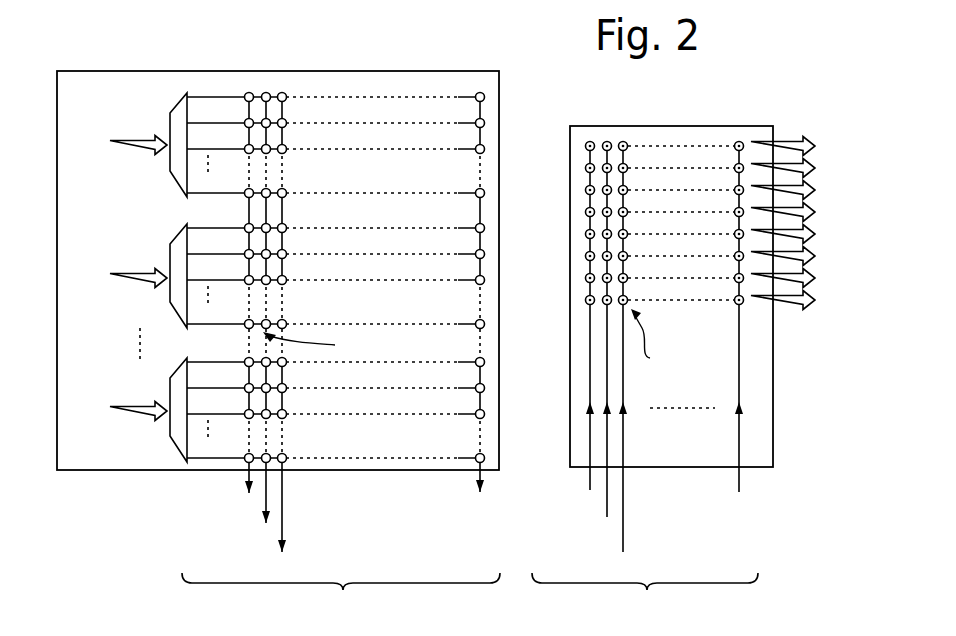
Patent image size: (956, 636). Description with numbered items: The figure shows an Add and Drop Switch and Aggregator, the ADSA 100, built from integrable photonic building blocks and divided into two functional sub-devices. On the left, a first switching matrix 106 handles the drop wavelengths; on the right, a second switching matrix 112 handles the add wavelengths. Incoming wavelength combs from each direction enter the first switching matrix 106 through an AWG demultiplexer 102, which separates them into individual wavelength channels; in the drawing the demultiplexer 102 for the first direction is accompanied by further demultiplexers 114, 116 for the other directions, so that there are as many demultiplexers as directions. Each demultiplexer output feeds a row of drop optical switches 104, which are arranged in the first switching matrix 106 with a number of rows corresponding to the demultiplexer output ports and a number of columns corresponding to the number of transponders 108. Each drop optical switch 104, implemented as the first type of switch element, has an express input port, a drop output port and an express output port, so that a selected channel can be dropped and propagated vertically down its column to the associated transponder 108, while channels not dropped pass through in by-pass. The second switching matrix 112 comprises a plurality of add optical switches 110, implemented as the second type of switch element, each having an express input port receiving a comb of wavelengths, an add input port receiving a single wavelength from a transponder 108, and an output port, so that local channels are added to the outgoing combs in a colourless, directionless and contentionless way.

The Add and Drop Switch and Aggregator 100 is at (872, 557).
The demultiplexer 102 is at (178, 172).
The drop optical switch 104 is at (248, 92).
The first switching matrix 106 is at (490, 82).
The transponders 108 is at (470, 550).
The add optical switch 110 is at (586, 146).
The second switching matrix 112 is at (762, 376).
The wavelength demultiplexer (Direction 2) 114 is at (178, 299).
The wavelength demultiplexer (Direction 8) 116 is at (178, 440).